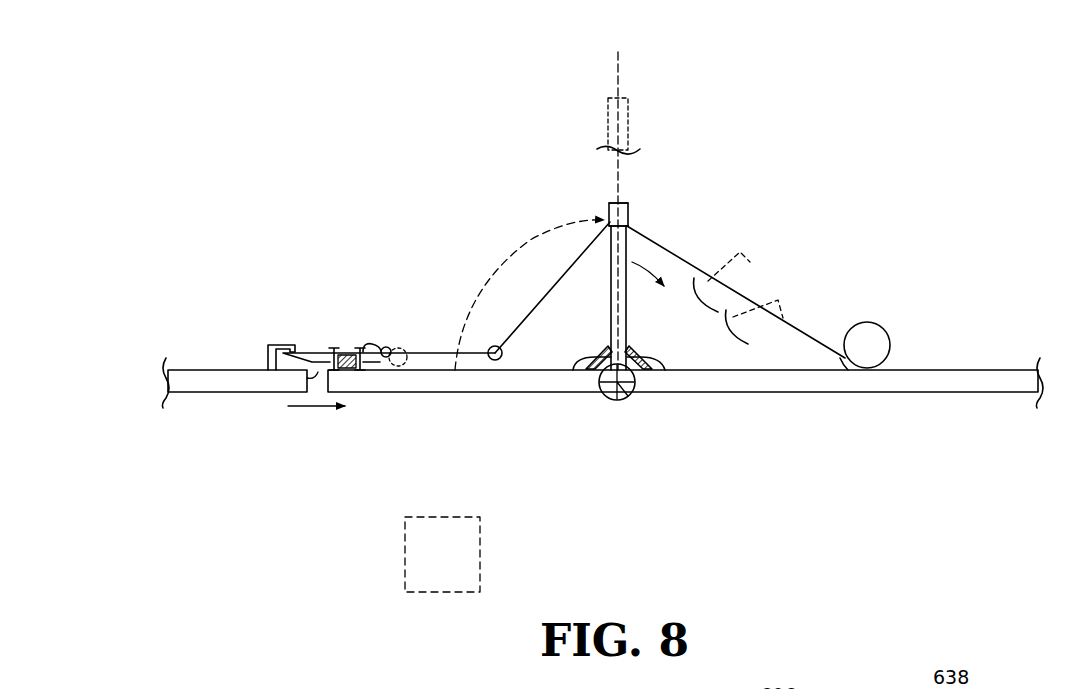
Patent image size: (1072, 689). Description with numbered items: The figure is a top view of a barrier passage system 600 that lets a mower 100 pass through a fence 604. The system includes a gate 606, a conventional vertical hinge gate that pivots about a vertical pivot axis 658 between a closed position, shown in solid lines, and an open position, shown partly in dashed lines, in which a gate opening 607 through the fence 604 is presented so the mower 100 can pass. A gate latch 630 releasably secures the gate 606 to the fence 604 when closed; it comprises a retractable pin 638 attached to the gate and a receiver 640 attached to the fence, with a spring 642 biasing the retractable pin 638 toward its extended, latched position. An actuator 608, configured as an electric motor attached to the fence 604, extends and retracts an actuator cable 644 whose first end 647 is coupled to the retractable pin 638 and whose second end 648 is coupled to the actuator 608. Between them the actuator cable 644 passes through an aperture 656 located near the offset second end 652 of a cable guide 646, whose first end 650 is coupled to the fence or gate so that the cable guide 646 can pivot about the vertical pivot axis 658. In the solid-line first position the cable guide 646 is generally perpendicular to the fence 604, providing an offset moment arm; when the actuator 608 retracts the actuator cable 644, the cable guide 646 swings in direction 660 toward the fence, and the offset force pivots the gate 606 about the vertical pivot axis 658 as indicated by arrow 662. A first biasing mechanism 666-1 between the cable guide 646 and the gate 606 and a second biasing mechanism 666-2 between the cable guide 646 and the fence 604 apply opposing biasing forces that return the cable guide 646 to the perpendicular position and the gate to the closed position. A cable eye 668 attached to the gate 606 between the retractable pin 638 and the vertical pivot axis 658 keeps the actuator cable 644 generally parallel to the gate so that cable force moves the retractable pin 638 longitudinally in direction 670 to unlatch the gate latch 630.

The barrier passage system 600 is at (446, 104).
The fence 604 is at (183, 393).
The gate 606 is at (629, 108).
The gate opening 607 is at (313, 380).
The actuator 608 is at (890, 344).
The gate latch 630 is at (283, 280).
The retractable pin 638 is at (310, 352).
The receiver 640 is at (272, 345).
The spring 642 is at (347, 346).
The actuator cable 644 is at (416, 352).
The cable guide 646 is at (627, 312).
The first end 647 is at (385, 372).
The second end 648 is at (845, 393).
The first end 650 is at (582, 400).
The second end 652 is at (608, 208).
The aperture 656 is at (629, 228).
The vertical pivot axis 658 is at (625, 398).
The direction 660 is at (672, 256).
The arrow 662 is at (497, 245).
The first biasing mechanism 666-1 is at (568, 371).
The second biasing mechanism 666-2 is at (668, 371).
The cable eye 668 is at (491, 393).
The direction 670 is at (312, 408).
The mower 100 is at (488, 546).